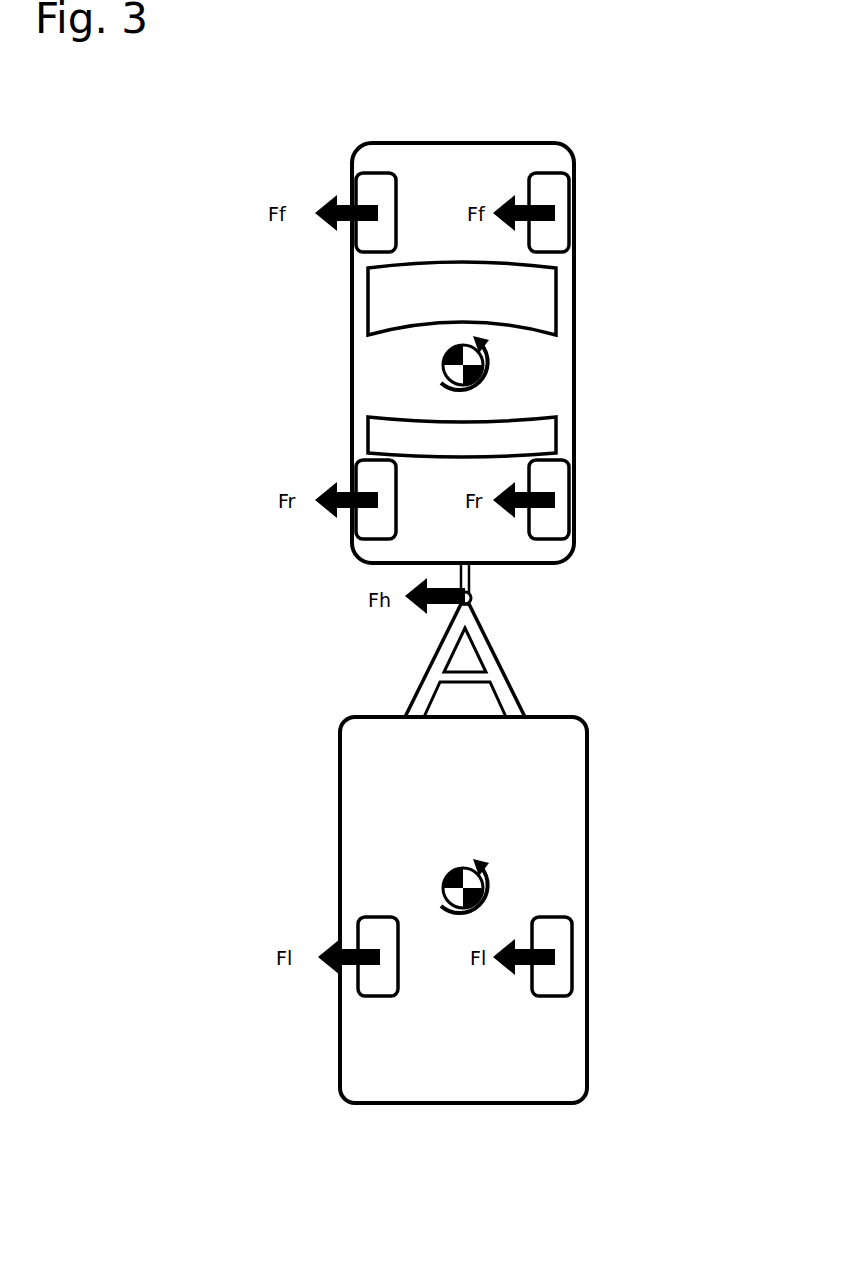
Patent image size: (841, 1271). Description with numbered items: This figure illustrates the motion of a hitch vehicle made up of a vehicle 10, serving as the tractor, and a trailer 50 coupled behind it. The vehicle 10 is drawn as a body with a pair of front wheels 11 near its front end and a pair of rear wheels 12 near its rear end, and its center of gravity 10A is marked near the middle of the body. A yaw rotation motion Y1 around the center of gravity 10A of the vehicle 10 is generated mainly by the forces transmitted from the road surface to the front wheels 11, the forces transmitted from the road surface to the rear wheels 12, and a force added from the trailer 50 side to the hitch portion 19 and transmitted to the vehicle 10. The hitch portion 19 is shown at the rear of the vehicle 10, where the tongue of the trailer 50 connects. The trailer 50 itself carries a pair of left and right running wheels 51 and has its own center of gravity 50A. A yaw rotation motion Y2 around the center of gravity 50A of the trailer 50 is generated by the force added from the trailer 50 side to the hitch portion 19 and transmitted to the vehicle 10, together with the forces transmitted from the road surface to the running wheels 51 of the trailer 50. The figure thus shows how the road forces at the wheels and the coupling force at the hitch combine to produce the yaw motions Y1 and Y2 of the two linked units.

The vehicle 10 is at (498, 143).
The front wheels 11 is at (355, 180).
The rear wheels 12 is at (352, 462).
The center of gravity of the vehicle 10A is at (440, 367).
The yaw rotation motion Y1 is at (505, 375).
The hitch portion 19 is at (476, 597).
The trailer 50 is at (590, 783).
The center of gravity of the trailer 50A is at (440, 885).
The yaw rotation motion Y2 is at (500, 885).
The running wheels 51 is at (380, 1000).